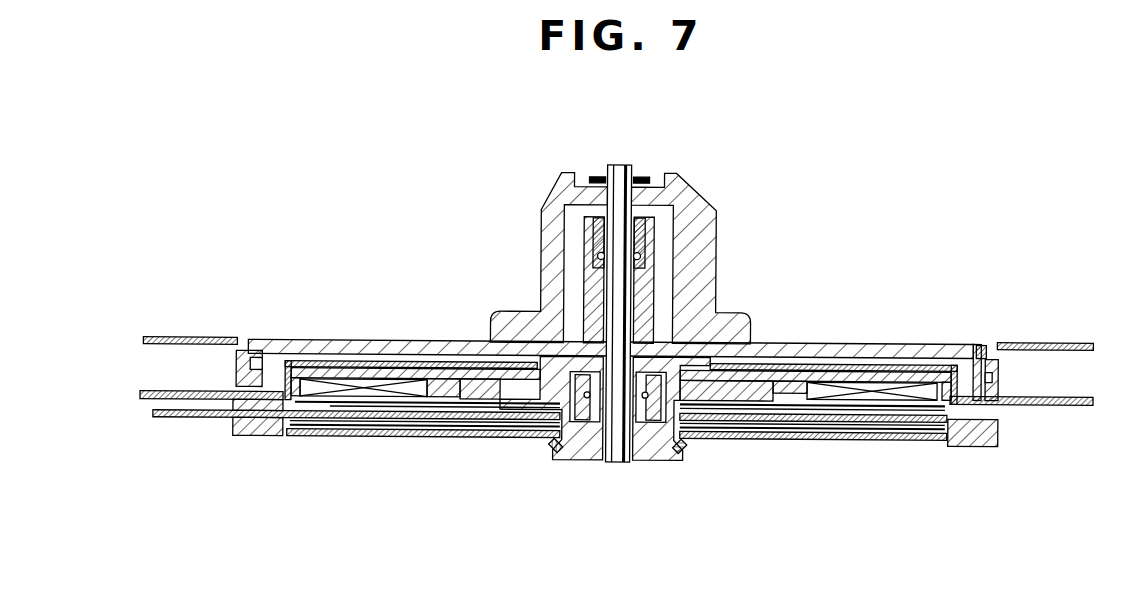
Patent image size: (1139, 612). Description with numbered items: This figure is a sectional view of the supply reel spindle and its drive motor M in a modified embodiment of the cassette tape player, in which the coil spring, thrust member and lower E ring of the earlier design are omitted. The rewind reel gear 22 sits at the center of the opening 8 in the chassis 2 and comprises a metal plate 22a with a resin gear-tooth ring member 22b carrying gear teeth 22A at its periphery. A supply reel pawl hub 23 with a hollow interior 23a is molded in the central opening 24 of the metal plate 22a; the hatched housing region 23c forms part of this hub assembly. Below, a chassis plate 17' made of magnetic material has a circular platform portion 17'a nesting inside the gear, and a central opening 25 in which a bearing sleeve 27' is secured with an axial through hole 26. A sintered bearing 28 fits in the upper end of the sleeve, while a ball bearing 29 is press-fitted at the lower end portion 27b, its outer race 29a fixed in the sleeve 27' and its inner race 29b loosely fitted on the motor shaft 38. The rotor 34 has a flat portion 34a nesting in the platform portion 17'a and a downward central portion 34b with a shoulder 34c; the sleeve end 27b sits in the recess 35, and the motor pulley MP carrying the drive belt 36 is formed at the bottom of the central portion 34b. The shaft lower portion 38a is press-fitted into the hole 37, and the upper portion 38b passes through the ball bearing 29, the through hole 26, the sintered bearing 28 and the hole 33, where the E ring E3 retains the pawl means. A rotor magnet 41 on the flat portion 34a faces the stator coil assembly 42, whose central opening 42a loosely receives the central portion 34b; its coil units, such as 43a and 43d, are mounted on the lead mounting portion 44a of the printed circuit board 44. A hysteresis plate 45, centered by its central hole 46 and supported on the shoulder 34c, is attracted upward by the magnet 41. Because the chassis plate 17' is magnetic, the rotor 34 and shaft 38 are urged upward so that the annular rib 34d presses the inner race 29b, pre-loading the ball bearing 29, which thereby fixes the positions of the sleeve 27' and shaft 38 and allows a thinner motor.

The chassis 2 is at (1030, 342).
The opening 8 is at (981, 345).
The chassis plate 17' is at (616, 426).
The platform portion 17'a is at (375, 322).
The rewind reel gear 22 is at (872, 349).
The gear teeth 22A is at (240, 374).
The metal plate 22a is at (808, 366).
The gear-tooth ring member 22b is at (992, 386).
The supply reel pawl hub 23 is at (674, 192).
The hollow interior 23a is at (700, 262).
The housing lower portion 23c is at (540, 325).
The central opening 24 is at (742, 335).
The central opening 25 is at (498, 335).
The through hole 26 is at (597, 256).
The bearing sleeve 27' is at (674, 220).
The lower end portion of the bearing sleeve 27b is at (580, 450).
The sintered bearing 28 is at (646, 238).
The ball bearing 29 is at (652, 422).
The outer race 29a is at (590, 455).
The inner race 29b is at (588, 422).
The hole 33 is at (618, 168).
The rotor 34 is at (346, 377).
The flat portion 34a is at (322, 372).
The central portion 34b is at (745, 402).
The shoulder 34c is at (553, 450).
The annular rib 34d is at (655, 460).
The recess 35 is at (560, 432).
The drive belt 36 is at (685, 450).
The hole 37 is at (620, 462).
The motor shaft 38 is at (592, 286).
The lower portion of the shaft 38a is at (612, 463).
The upper portion of the shaft 38b is at (594, 232).
The rotor magnet 41 is at (440, 388).
The stator coil assembly 42 is at (350, 427).
The central opening 42a is at (705, 426).
The coil unit 43a is at (390, 438).
The coil unit 43d is at (912, 438).
The printed circuit board 44 is at (190, 420).
The lead mounting portion 44a is at (296, 438).
The hysteresis plate 45 is at (430, 428).
The central hole 46 is at (553, 462).
The E ring E3 is at (596, 178).
The drive motor M is at (947, 455).
The motor pulley MP is at (670, 457).